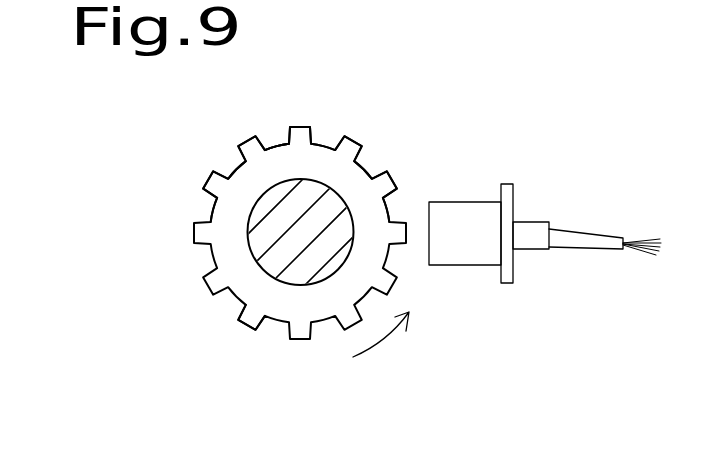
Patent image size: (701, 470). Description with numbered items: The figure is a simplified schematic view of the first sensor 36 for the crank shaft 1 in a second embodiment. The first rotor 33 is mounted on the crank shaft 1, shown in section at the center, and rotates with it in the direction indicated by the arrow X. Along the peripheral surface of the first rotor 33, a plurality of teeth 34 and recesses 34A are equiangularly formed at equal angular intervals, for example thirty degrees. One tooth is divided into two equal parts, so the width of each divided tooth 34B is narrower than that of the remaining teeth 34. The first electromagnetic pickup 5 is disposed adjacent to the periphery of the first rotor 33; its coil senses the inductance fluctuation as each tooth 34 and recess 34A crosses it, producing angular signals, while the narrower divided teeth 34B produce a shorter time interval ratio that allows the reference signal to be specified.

The crank shaft 1 is at (308, 188).
The first electromagnetic pickup 5 is at (472, 252).
The first rotor 33 is at (220, 260).
The teeth 34 is at (208, 176).
The recesses 34A is at (276, 142).
The divided tooth 34B is at (236, 318).
The first sensor 36 is at (380, 255).
The rotation direction X is at (367, 355).